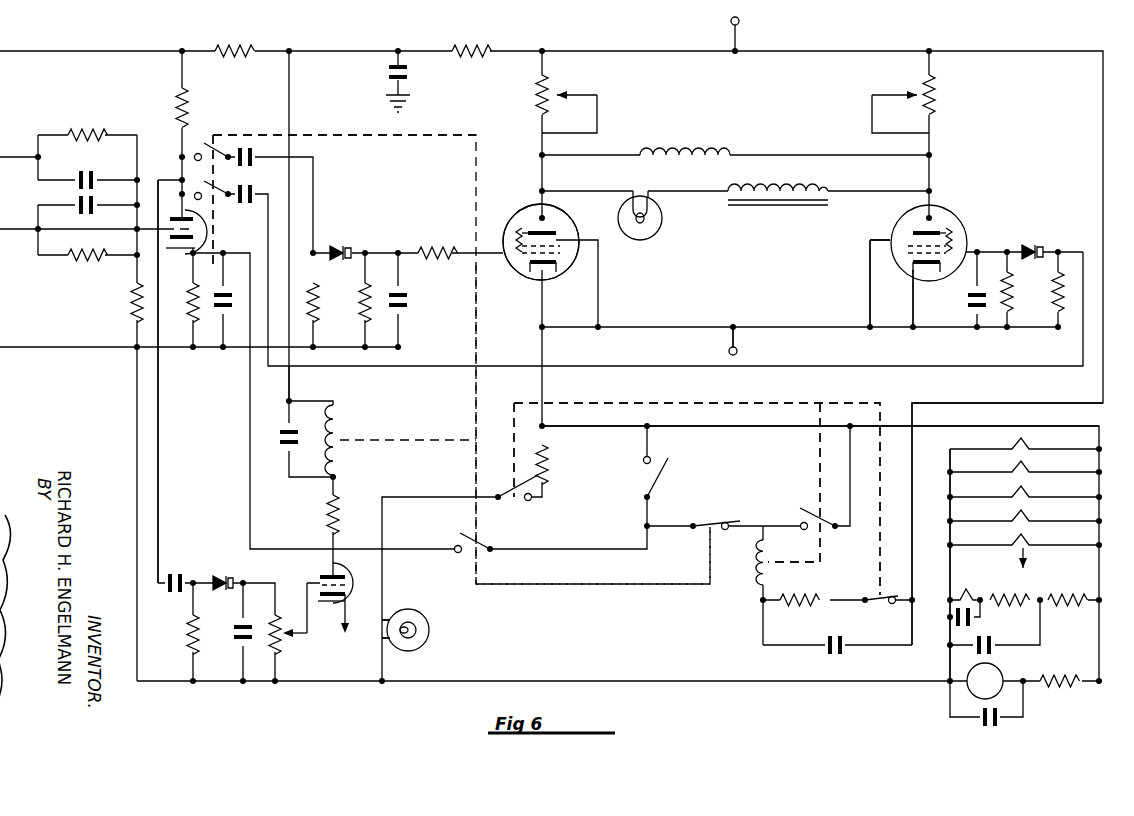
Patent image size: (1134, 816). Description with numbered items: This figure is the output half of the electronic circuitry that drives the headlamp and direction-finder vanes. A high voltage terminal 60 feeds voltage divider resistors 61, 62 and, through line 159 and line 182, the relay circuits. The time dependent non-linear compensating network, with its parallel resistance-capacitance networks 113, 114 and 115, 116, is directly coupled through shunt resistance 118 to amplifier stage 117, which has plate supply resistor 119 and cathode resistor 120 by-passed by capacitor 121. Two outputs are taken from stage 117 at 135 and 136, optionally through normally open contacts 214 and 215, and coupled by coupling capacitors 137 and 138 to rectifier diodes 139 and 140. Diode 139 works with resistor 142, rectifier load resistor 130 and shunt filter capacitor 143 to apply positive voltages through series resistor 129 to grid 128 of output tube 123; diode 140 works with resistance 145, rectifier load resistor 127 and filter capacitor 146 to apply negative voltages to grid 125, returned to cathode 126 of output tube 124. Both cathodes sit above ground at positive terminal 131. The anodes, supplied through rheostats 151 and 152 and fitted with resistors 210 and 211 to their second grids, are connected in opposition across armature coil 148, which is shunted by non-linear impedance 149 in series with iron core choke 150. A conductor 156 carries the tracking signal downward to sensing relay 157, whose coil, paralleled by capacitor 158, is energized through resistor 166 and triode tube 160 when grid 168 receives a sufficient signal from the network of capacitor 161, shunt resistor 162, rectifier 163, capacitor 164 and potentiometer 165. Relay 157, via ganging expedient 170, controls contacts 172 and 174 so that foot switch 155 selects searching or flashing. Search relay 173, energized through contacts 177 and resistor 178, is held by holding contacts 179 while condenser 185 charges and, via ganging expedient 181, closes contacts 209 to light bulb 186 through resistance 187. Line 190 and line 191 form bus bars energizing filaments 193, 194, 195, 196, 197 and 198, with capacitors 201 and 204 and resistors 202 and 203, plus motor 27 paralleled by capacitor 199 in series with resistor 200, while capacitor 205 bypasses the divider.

The motor 27 is at (1002, 674).
The high voltage terminal 60 is at (730, 22).
The voltage divider resistor 61 is at (480, 46).
The voltage divider resistor 62 is at (241, 46).
The resistor of compensating network 113 is at (82, 132).
The capacitor of compensating network 114 is at (93, 178).
The capacitor of compensating network 115 is at (96, 207).
The resistor of compensating network 116 is at (80, 259).
The amplifier stage 117 is at (181, 255).
The shunt resistance 118 is at (133, 301).
The plate supply resistor 119 is at (178, 106).
The cathode resistor 120 is at (193, 300).
The by-pass capacitor 121 is at (225, 307).
The output tube 123 is at (526, 203).
The output tube 124 is at (941, 204).
The grid 125 is at (896, 267).
The cathode 126 is at (930, 272).
The rectifier load resistor 127 is at (1017, 284).
The grid 128 is at (513, 267).
The series resistor 129 is at (435, 250).
The rectifier load resistor 130 is at (321, 303).
The positive terminal 131 is at (729, 351).
The output line of stage 117 135 is at (193, 150).
The output line of stage 117 136 is at (195, 212).
The coupling capacitor 137 is at (255, 155).
The coupling capacitor 138 is at (252, 192).
The rectifier diode 139 is at (345, 250).
The rectifier diode 140 is at (1040, 250).
The resistor 142 is at (362, 308).
The shunt filter capacitor 143 is at (402, 299).
The resistance 145 is at (1068, 304).
The filter capacitor 146 is at (973, 302).
The armature coil 148 is at (687, 148).
The non-linear impedance 149 is at (662, 224).
The iron core choke 150 is at (779, 185).
The rheostat 151 is at (559, 88).
The rheostat 152 is at (912, 84).
The foot switch 155 is at (660, 484).
The conductor 156 is at (160, 465).
The sensing relay 157 is at (344, 433).
The capacitor 158 is at (293, 443).
The line 159 is at (289, 401).
The triode tube 160 is at (358, 604).
The capacitor 161 is at (192, 580).
The shunt resistor 162 is at (188, 642).
The rectifier 163 is at (233, 560).
The capacitor 164 is at (240, 637).
The potentiometer 165 is at (287, 640).
The resistor 166 is at (328, 513).
The grid 168 is at (318, 580).
The ganging expedient 170 is at (581, 587).
The contacts 172 is at (704, 530).
The search relay 173 is at (758, 564).
The contacts 174 is at (482, 546).
The contacts 177 is at (888, 602).
The resistor 178 is at (803, 600).
The holding contacts 179 is at (824, 526).
The ganging expedient 181 is at (684, 404).
The line 182 is at (984, 404).
The condenser 185 is at (827, 648).
The bulb 186 is at (430, 634).
The resistance 187 is at (556, 465).
The line 190 is at (1001, 427).
The line 191 is at (948, 670).
The filament 193 is at (1032, 446).
The filament 194 is at (1032, 469).
The filament 195 is at (1032, 494).
The filament 196 is at (1032, 518).
The filament 197 is at (1032, 542).
The filament 198 is at (967, 592).
The capacitor 199 is at (994, 720).
The resistor 200 is at (1052, 688).
The capacitor 201 is at (954, 610).
The resistor 202 is at (1014, 594).
The resistor 203 is at (1066, 610).
The capacitor 204 is at (1015, 637).
The capacitor 205 is at (390, 66).
The contacts 209 is at (504, 500).
The resistor 210 is at (515, 228).
The resistor 211 is at (954, 232).
The normally open contacts 214 is at (206, 146).
The normally open contacts 215 is at (217, 196).